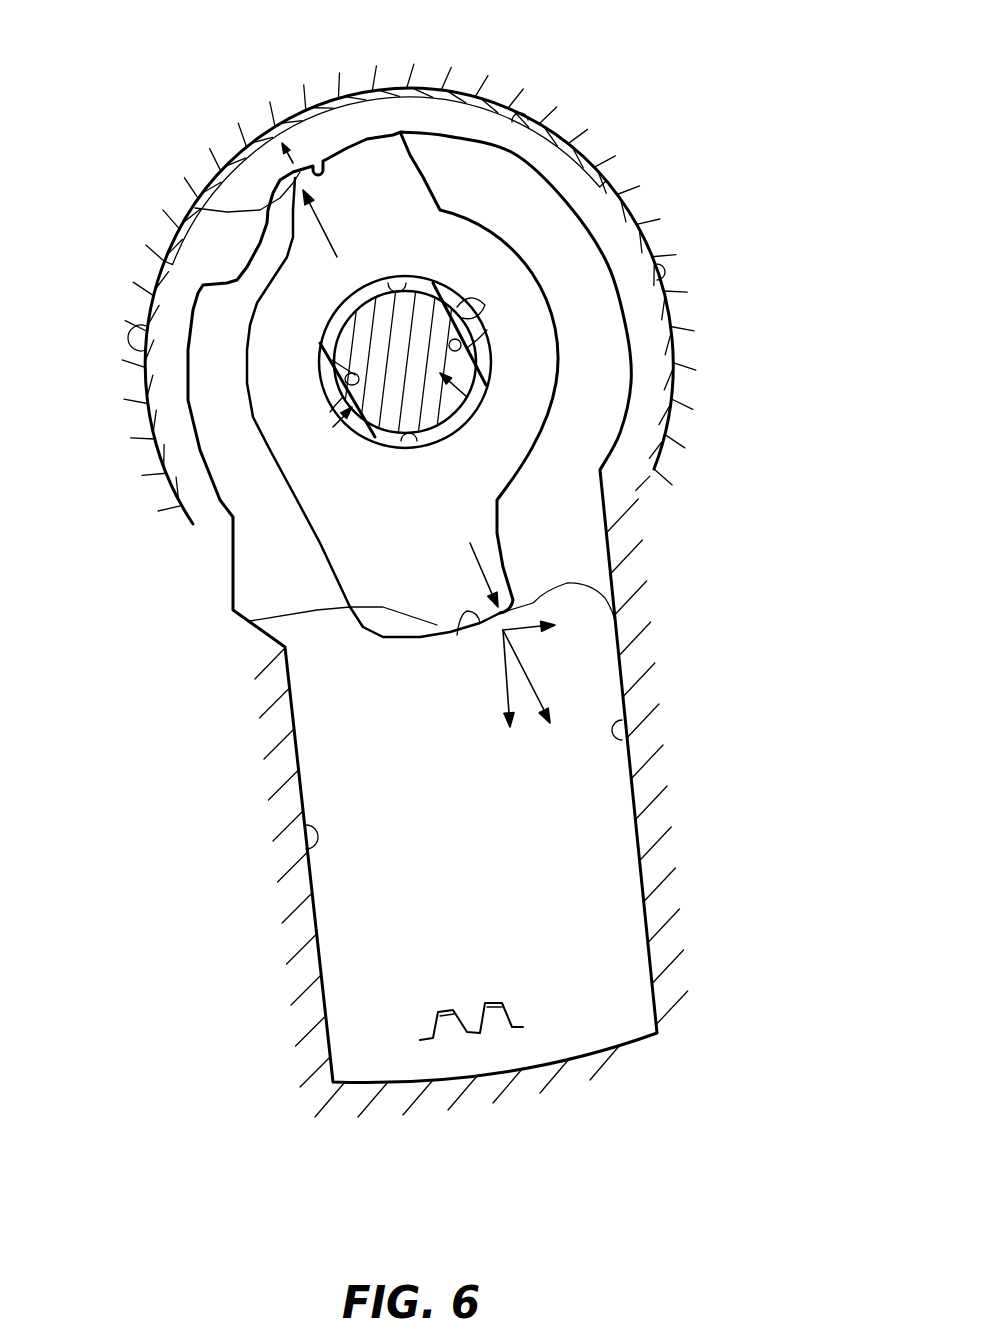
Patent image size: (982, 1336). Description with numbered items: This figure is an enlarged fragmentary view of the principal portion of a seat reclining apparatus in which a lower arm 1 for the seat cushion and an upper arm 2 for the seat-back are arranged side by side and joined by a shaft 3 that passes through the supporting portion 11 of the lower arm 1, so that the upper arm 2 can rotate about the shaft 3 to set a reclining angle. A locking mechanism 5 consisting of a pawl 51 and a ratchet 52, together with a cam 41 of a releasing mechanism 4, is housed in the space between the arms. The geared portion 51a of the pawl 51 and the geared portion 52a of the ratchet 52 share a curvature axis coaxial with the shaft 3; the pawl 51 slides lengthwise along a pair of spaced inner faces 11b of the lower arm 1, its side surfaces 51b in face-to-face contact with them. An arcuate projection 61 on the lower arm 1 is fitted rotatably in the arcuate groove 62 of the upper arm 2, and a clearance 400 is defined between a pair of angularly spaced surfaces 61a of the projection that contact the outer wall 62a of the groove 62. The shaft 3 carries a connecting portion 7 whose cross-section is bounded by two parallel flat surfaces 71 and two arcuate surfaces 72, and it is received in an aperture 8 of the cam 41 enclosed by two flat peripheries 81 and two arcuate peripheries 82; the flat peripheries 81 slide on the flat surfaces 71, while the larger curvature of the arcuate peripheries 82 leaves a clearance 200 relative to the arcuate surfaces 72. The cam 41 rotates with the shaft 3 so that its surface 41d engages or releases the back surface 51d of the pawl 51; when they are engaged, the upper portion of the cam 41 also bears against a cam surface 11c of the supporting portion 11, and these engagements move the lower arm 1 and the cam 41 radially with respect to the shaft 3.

The lower arm 1 is at (236, 789).
The upper arm 2 is at (666, 178).
The shaft 3 is at (452, 393).
The releasing mechanism 4 is at (470, 192).
The locking mechanism 5 is at (585, 960).
The connecting portion 7 is at (342, 418).
The aperture 8 is at (380, 430).
The supporting portion 11 is at (592, 458).
The inner faces 11b is at (627, 748).
The cam surface 11c is at (320, 160).
The cam 41 is at (500, 273).
The surface of the cam 41d is at (195, 208).
The pawl 51 is at (597, 872).
The geared portion of the pawl 51a is at (467, 1023).
The side surfaces of the pawl 51b is at (657, 1018).
The back surface of the pawl 51d is at (457, 635).
The ratchet 52 is at (485, 1067).
The geared portion of the ratchet 52a is at (497, 1027).
The arcuate projection 61 is at (420, 98).
The angularly spaced surfaces 61a is at (668, 276).
The arcuate groove 62 is at (520, 122).
The outer wall of the groove 62a is at (528, 118).
The flat surfaces 71 is at (470, 308).
The arcuate surfaces 72 is at (385, 284).
The flat peripheries 81 is at (468, 348).
The arcuate peripheries 82 is at (412, 288).
The clearance 200 is at (447, 283).
The clearance 400 is at (355, 92).